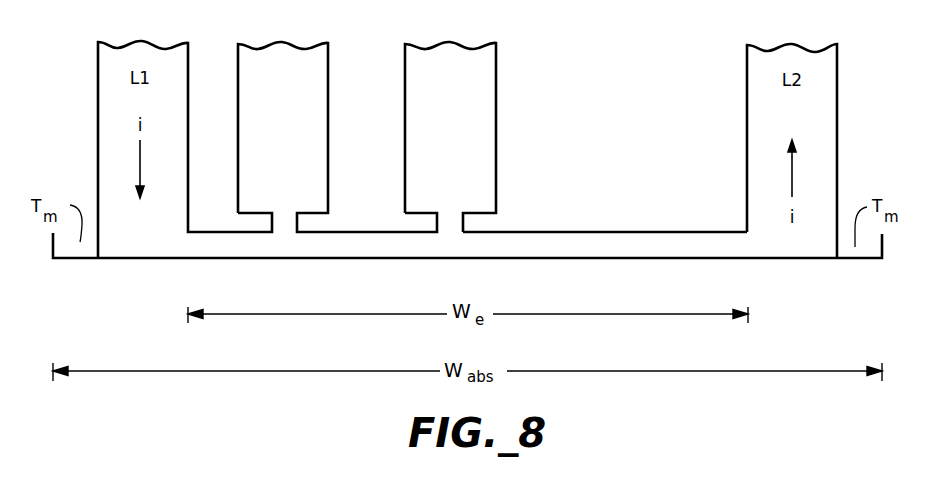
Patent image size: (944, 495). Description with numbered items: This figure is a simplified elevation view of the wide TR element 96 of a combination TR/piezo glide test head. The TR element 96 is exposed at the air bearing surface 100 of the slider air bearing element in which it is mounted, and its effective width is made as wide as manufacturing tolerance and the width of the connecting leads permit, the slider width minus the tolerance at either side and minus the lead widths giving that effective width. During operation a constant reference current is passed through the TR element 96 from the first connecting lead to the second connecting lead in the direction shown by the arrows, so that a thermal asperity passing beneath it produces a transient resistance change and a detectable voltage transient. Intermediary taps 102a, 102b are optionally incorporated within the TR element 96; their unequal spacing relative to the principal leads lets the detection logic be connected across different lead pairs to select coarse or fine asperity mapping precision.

The intermediary tap 102a is at (309, 136).
The intermediary tap 102b is at (477, 136).
The TR element 96 is at (596, 247).
The air bearing surface 100 is at (303, 258).